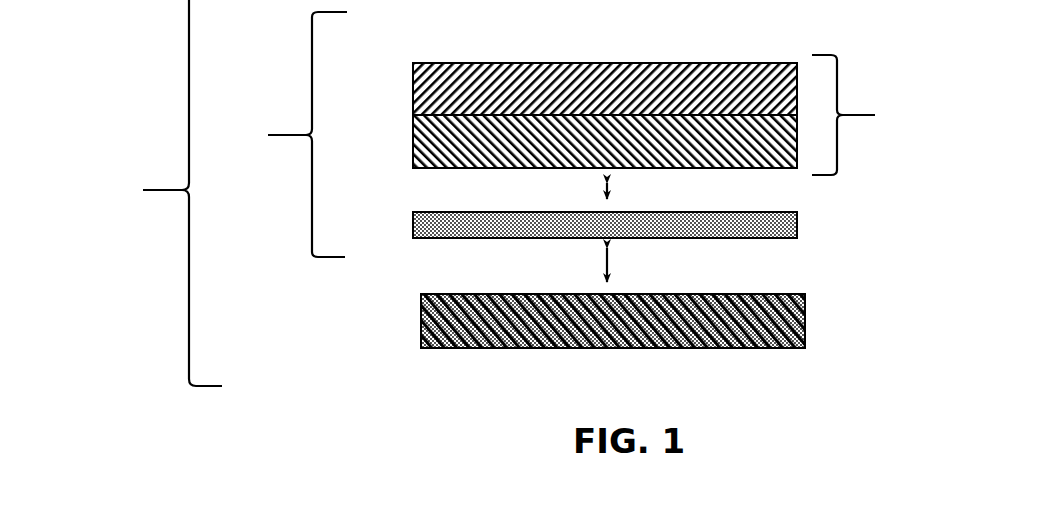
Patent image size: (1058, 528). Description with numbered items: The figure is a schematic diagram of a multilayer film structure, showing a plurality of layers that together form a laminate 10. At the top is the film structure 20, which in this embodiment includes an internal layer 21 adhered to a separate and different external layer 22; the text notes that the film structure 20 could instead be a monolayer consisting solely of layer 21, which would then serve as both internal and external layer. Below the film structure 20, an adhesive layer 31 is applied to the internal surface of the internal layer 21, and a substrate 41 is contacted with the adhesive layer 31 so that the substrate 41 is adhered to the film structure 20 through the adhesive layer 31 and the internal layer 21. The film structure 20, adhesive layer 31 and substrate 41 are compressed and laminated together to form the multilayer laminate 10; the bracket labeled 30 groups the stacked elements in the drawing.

The laminate 10 is at (128, 188).
The film structure 20 is at (643, 107).
The internal layer 21 is at (413, 143).
The external layer 22 is at (413, 92).
The layer arrangement 30 is at (262, 137).
The adhesive layer 31 is at (797, 223).
The substrate 41 is at (783, 313).